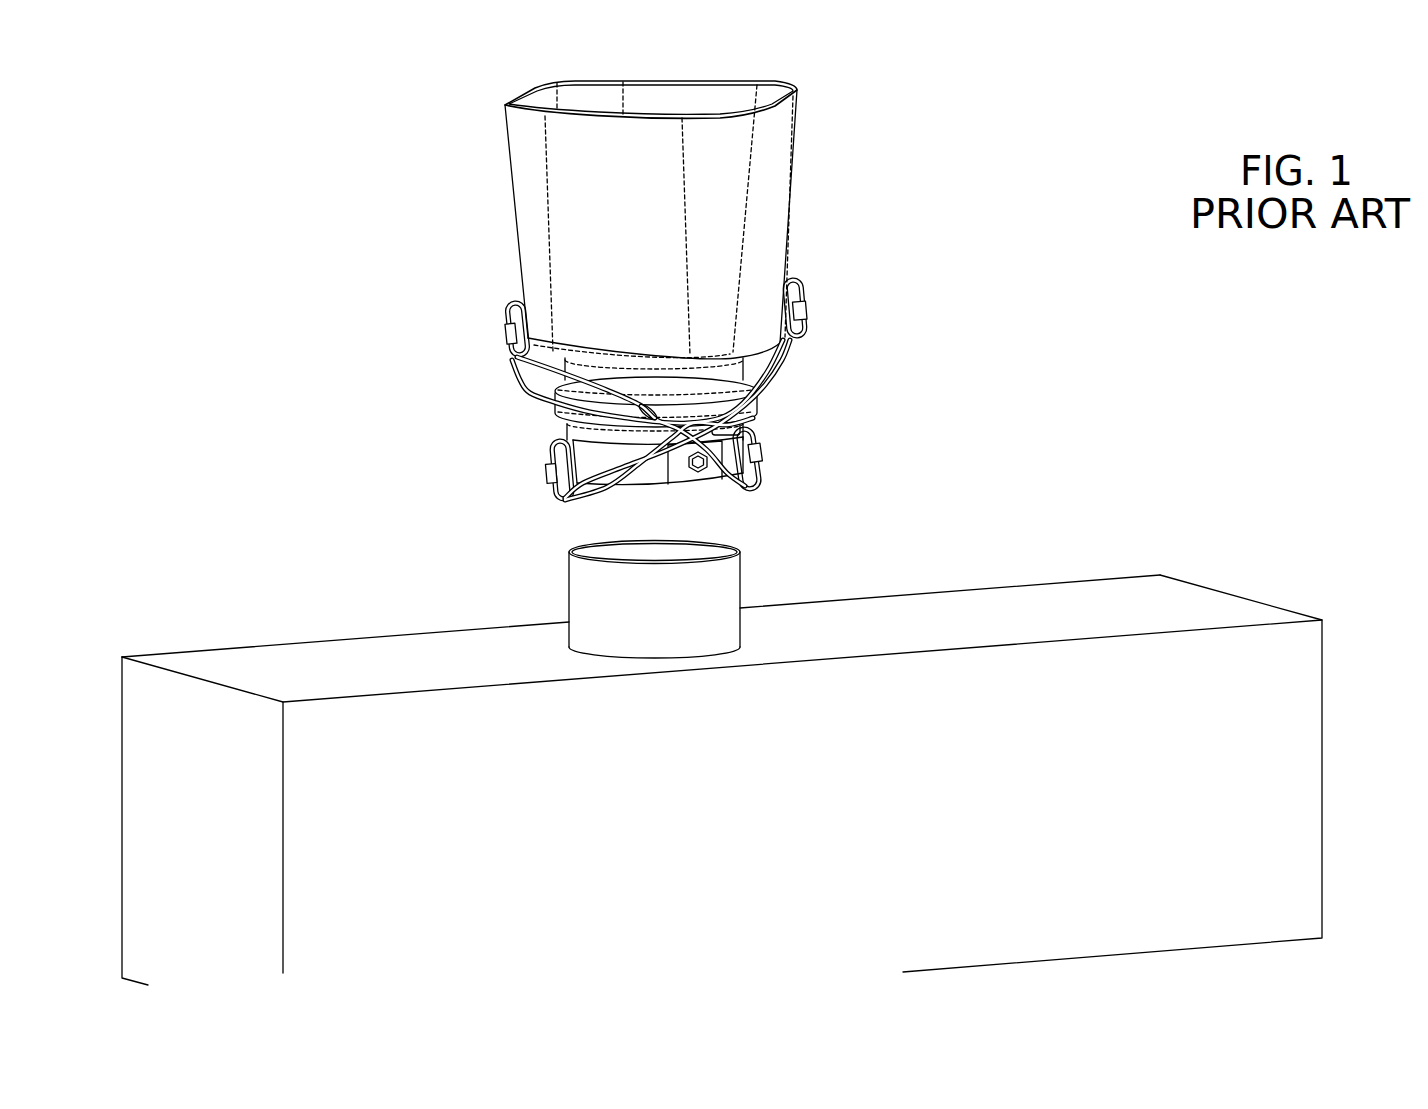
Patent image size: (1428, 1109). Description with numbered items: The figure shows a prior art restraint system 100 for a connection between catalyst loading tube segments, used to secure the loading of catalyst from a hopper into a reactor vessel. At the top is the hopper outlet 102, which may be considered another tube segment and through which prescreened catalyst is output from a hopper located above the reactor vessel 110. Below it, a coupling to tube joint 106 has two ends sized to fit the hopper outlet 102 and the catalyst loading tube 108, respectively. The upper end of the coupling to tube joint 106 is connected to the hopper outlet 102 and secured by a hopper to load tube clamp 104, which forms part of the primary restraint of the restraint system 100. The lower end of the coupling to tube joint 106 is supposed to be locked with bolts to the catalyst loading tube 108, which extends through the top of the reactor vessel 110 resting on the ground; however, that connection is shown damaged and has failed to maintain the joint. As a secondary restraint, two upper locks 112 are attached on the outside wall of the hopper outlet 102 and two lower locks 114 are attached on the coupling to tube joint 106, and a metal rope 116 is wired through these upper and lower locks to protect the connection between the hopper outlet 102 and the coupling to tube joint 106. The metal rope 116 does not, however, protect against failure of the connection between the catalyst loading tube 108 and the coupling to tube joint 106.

The restraint system 100 is at (236, 92).
The hopper outlet 102 is at (655, 275).
The hopper to load tube clamp 104 is at (560, 423).
The coupling to tube joint 106 is at (687, 475).
The catalyst loading tube 108 is at (569, 560).
The reactor vessel 110 is at (1068, 615).
The upper locks 112 is at (500, 332).
The lower locks 114 is at (548, 465).
The metal rope 116 is at (770, 405).